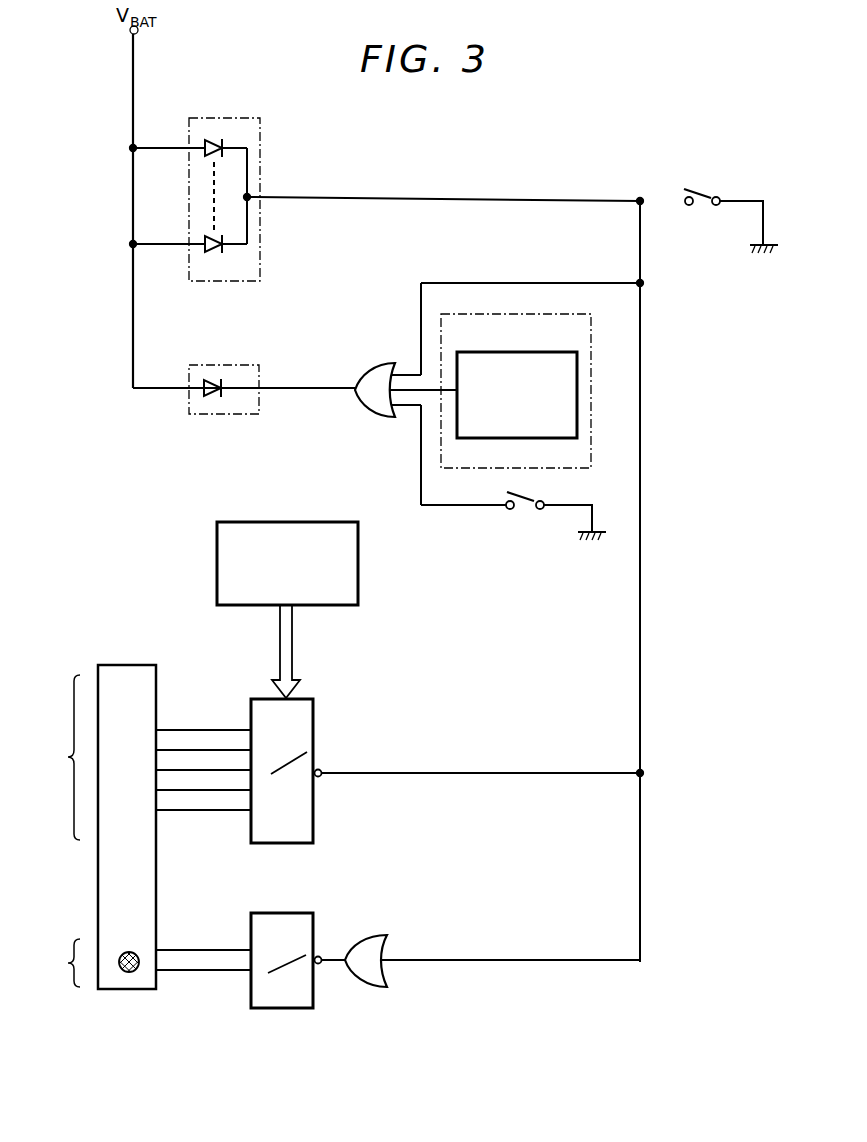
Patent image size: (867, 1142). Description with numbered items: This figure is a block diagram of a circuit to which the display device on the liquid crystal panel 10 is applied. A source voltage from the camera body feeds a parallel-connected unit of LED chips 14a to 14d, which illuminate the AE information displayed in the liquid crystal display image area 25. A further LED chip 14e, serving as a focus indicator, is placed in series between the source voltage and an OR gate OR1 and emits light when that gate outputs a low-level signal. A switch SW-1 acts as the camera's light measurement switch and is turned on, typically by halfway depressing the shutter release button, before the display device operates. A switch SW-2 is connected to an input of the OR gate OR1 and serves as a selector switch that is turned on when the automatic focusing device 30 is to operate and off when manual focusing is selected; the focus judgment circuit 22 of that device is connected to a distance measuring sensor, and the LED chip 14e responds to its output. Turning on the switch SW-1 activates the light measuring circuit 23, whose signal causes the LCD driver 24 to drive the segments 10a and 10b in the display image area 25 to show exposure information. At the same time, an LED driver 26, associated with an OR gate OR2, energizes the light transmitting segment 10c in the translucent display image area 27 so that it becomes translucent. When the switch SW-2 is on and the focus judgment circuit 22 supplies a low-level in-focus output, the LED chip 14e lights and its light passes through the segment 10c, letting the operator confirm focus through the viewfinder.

The liquid crystal panel 10 is at (117, 893).
The segment 10a is at (140, 727).
The segment 10b is at (140, 703).
The light transmitting segment 10c is at (129, 973).
The LED chip 14a is at (216, 136).
The LED chip 14d is at (218, 256).
The LED chip 14e is at (221, 398).
The focus judgment circuit 22 is at (503, 352).
The light measuring circuit 23 is at (294, 521).
The LCD driver 24 is at (316, 728).
The liquid crystal display image area 25 is at (58, 757).
The LED driver 26 is at (316, 925).
The translucent display image area 27 is at (59, 963).
The automatic focusing device 30 is at (563, 313).
The OR gate OR1 is at (377, 360).
The OR gate OR2 is at (376, 935).
The switch SW-1 is at (700, 190).
The switch SW-2 is at (526, 509).